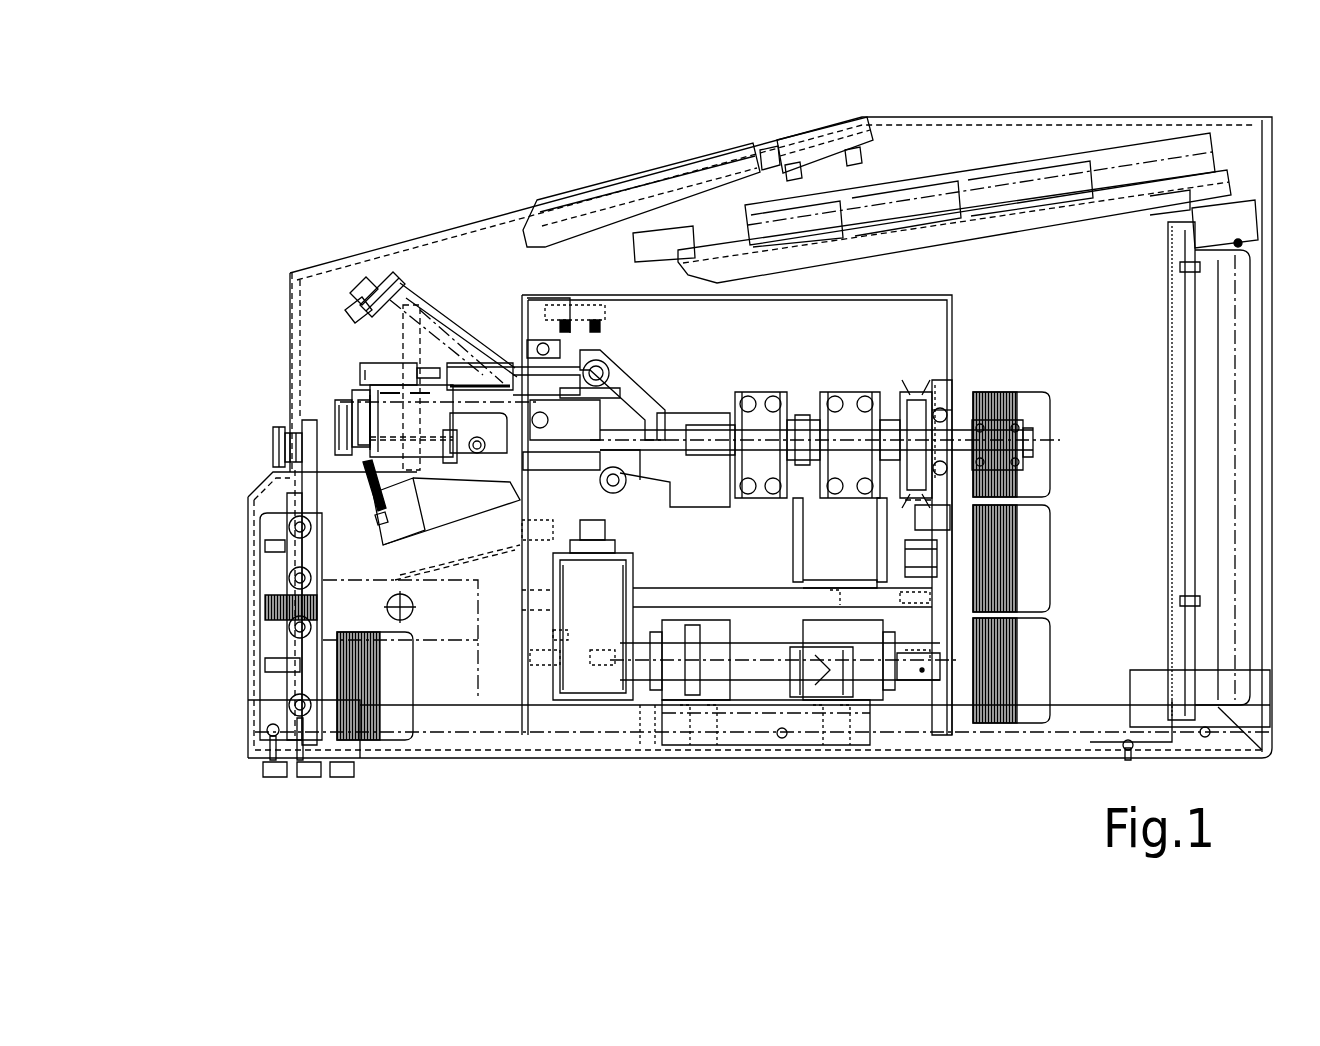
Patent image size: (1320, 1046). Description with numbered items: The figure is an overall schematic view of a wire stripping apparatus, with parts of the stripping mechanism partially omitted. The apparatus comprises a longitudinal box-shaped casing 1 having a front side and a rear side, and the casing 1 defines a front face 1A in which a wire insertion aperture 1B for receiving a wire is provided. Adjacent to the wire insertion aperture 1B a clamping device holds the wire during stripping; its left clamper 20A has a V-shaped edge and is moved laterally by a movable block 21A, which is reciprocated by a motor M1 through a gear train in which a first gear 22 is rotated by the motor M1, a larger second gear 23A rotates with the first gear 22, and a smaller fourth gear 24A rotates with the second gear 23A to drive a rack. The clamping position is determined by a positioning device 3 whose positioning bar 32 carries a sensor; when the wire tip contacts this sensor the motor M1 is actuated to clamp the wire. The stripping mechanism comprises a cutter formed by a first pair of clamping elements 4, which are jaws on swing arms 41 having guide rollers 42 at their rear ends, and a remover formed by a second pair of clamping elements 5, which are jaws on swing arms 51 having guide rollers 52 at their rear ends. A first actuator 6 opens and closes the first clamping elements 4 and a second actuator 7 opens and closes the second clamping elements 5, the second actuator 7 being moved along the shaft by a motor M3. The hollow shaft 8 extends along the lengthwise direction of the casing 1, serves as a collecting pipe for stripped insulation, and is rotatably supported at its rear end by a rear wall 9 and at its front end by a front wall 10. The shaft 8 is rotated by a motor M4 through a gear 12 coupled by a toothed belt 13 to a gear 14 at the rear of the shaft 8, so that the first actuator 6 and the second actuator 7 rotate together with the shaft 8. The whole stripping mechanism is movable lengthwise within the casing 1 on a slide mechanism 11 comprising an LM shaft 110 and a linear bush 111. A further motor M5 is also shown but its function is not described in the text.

The casing 1 is at (1213, 118).
The front face 1A is at (290, 335).
The wire insertion aperture 1B is at (270, 442).
The clamper 20A is at (313, 420).
The movable block 21A is at (307, 547).
The first gear 22 is at (280, 690).
The second gear 23A is at (300, 645).
The fourth gear 24A is at (270, 597).
The positioning device 3 is at (401, 276).
The positioning bar 32 is at (353, 313).
The first pair of clamping elements 4 is at (357, 367).
The swing arm 41 is at (513, 367).
The guide roller 42 is at (612, 365).
The second pair of clamping elements 5 is at (365, 485).
The swing arm 51 is at (417, 537).
The guide roller 52 is at (622, 490).
The first actuator 6 is at (655, 385).
The second actuator 7 is at (700, 492).
The shaft 8 is at (895, 440).
The rear wall 9 is at (942, 717).
The front wall 10 is at (533, 697).
The slide base 11 is at (745, 718).
The LM shaft 110 is at (910, 675).
The linear bush 111 is at (847, 700).
The gear 12 is at (917, 573).
The toothed belt 13 is at (917, 522).
The gear 14 is at (918, 418).
The motor M1 is at (397, 717).
The motor M3 is at (1030, 407).
The motor M4 is at (917, 556).
The motor M5 is at (990, 655).